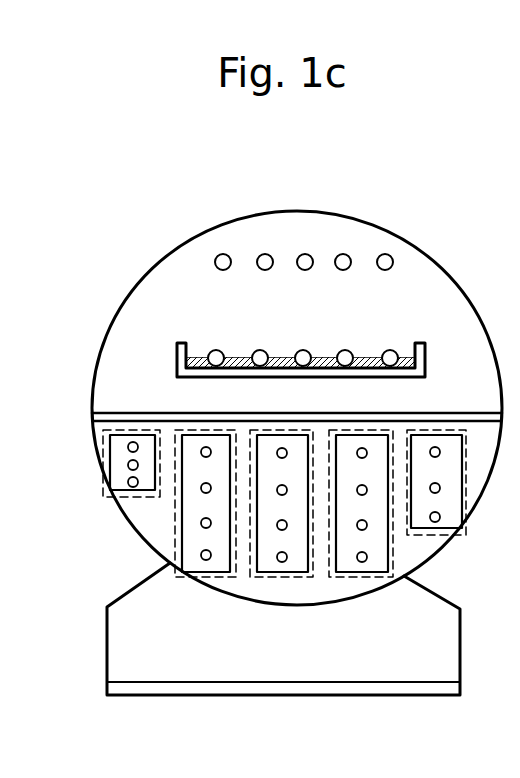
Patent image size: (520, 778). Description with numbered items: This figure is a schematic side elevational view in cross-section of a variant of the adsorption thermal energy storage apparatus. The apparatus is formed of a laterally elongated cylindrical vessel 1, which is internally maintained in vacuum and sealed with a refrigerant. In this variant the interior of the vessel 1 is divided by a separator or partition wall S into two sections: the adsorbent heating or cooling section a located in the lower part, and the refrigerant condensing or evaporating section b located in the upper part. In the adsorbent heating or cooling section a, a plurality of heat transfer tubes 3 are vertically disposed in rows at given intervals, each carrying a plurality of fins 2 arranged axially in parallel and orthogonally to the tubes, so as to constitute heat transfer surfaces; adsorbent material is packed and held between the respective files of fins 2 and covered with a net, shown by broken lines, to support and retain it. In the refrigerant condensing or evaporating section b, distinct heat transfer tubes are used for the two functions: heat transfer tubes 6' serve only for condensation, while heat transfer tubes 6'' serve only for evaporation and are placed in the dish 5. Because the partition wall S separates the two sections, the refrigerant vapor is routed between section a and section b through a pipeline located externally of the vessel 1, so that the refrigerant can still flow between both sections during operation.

The cylindrical vessel 1 is at (310, 211).
The fins 2 is at (197, 540).
The heat transfer tubes 3 is at (206, 560).
The dish 5 is at (428, 357).
The heat transfer tubes for condensation 6' is at (322, 209).
The heat transfer tubes for evaporation 6'' is at (290, 243).
The adsorbent heating or cooling section a is at (280, 595).
The refrigerant condensing or evaporating section b is at (152, 298).
The separator or partition wall S is at (92, 413).